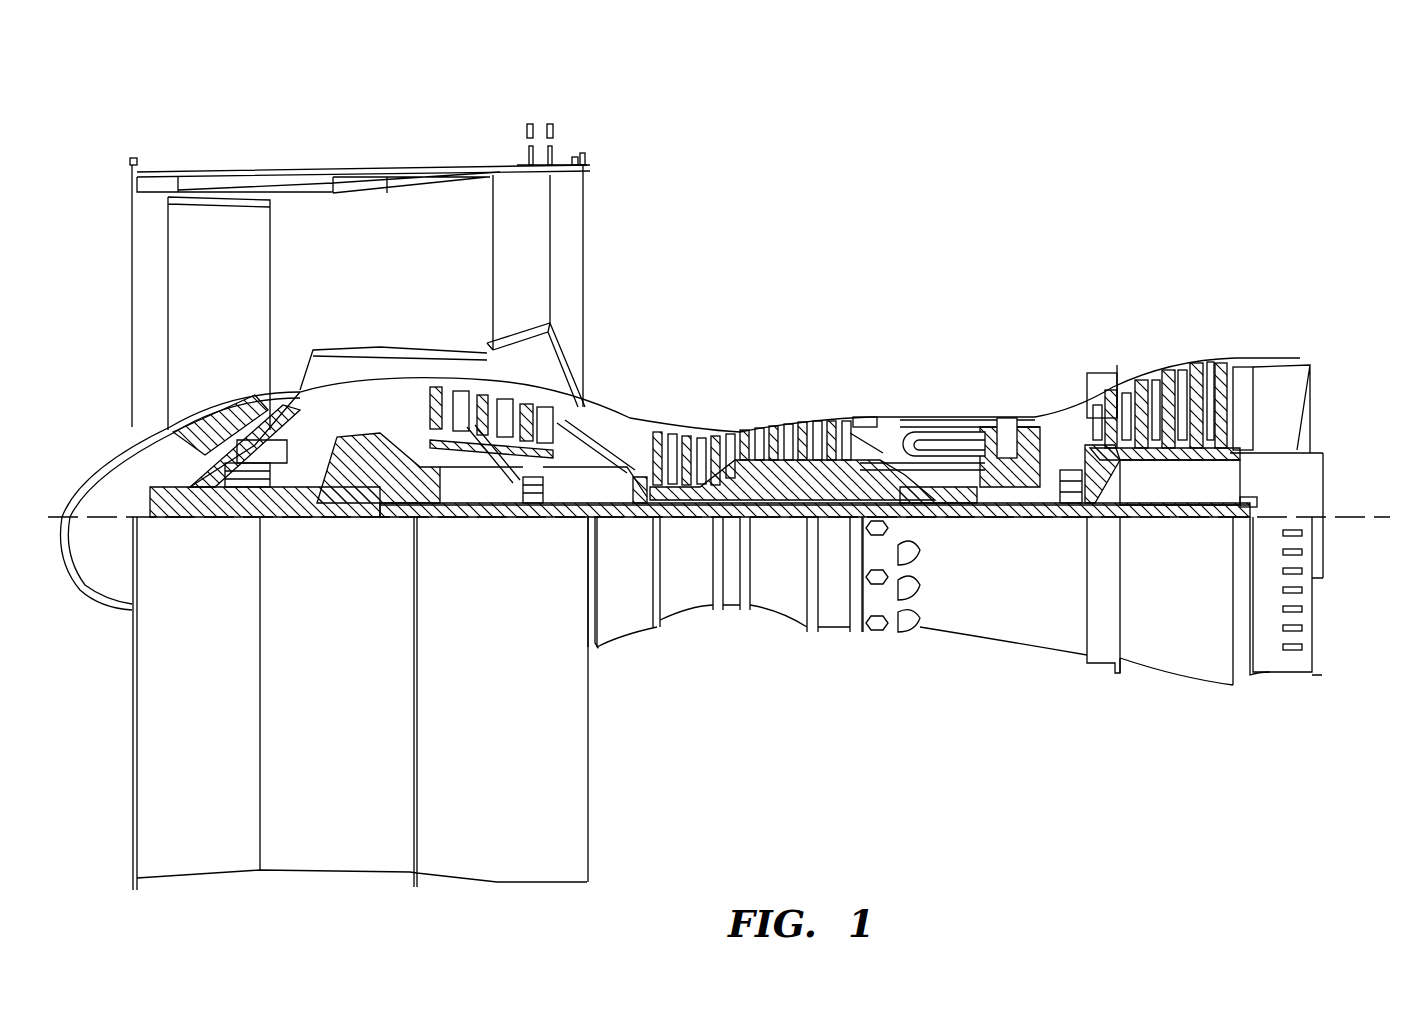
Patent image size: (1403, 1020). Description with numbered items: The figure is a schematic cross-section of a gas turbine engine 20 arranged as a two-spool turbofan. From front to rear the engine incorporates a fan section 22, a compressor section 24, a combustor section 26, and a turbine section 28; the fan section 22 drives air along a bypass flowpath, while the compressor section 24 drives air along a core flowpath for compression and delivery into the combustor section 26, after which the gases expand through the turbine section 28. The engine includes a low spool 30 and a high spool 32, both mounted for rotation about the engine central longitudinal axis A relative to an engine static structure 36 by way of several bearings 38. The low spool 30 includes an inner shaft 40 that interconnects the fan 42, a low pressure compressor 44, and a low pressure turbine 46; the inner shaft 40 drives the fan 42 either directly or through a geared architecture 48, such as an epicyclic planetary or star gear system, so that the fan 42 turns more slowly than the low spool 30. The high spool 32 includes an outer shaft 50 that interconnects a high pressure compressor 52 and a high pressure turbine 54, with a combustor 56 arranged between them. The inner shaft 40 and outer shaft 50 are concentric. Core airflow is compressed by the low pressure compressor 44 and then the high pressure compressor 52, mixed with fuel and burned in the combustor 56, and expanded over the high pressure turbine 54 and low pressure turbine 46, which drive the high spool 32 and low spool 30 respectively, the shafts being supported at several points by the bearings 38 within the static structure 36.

The gas turbine engine 20 is at (986, 226).
The fan section 22 is at (200, 152).
The compressor section 24 is at (668, 380).
The combustor section 26 is at (914, 372).
The turbine section 28 is at (1117, 355).
The low spool 30 is at (788, 519).
The high spool 32 is at (837, 480).
The engine static structure 36 is at (838, 629).
The bearings 38 is at (248, 482).
The inner shaft 40 is at (621, 523).
The fan 42 is at (232, 316).
The low pressure compressor 44 is at (500, 395).
The low pressure turbine 46 is at (1165, 362).
The geared architecture 48 is at (370, 503).
The outer shaft 50 is at (933, 508).
The high pressure compressor 52 is at (747, 483).
The high pressure turbine 54 is at (1010, 420).
The combustor 56 is at (925, 440).
The engine central longitudinal axis A is at (1384, 522).